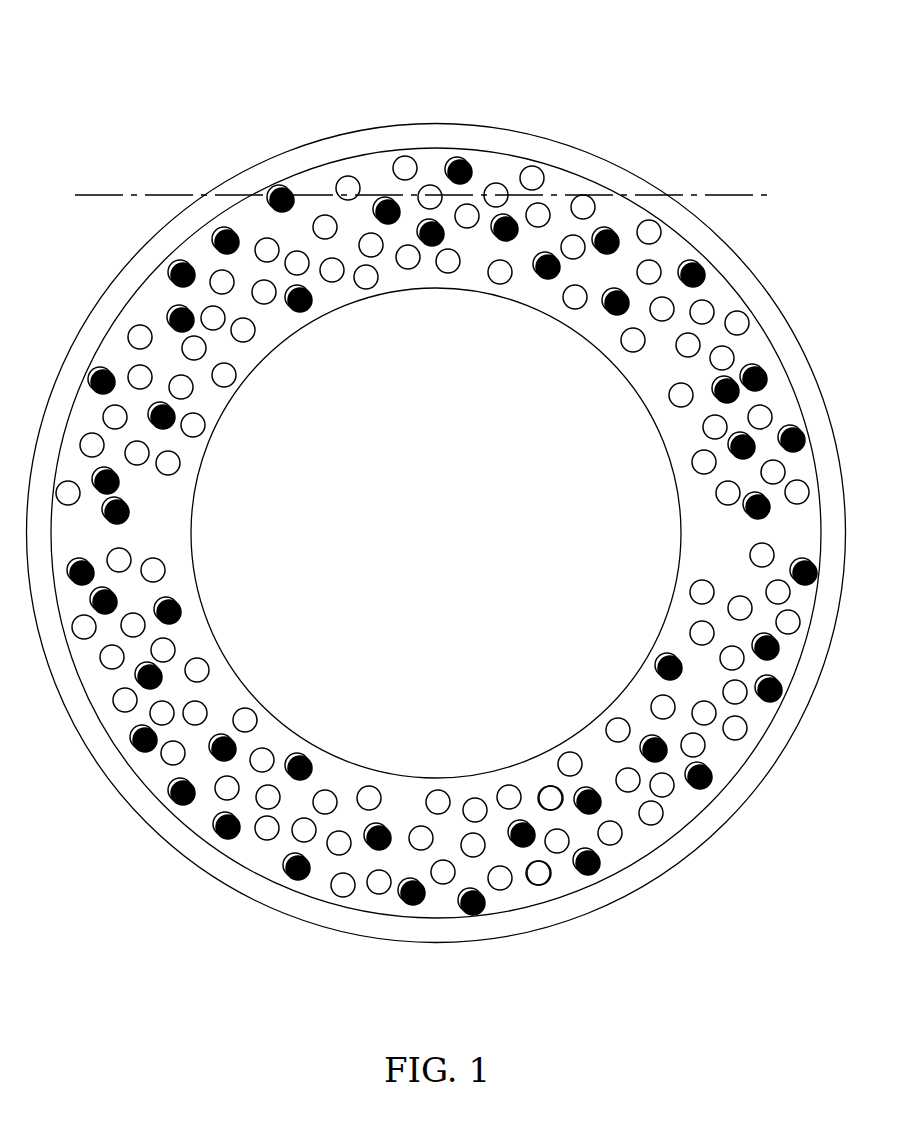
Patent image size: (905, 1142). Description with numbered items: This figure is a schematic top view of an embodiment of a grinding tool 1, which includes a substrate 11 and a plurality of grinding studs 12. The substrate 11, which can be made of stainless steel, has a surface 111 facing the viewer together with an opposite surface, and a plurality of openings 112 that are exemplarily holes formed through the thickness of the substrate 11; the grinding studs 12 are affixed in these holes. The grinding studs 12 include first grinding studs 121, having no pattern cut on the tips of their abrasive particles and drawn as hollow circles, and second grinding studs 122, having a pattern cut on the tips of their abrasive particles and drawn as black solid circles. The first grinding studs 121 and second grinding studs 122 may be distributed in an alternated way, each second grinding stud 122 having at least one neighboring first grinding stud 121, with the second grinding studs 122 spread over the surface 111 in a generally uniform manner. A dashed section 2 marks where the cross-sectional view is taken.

The grinding tool 1 is at (116, 32).
The substrate 11 is at (633, 172).
The surface 111 is at (758, 342).
The openings 112 is at (537, 167).
The grinding studs 12 is at (340, 66).
The first grinding studs 121 is at (400, 167).
The second grinding studs 122 is at (462, 163).
The section 2 is at (425, 198).